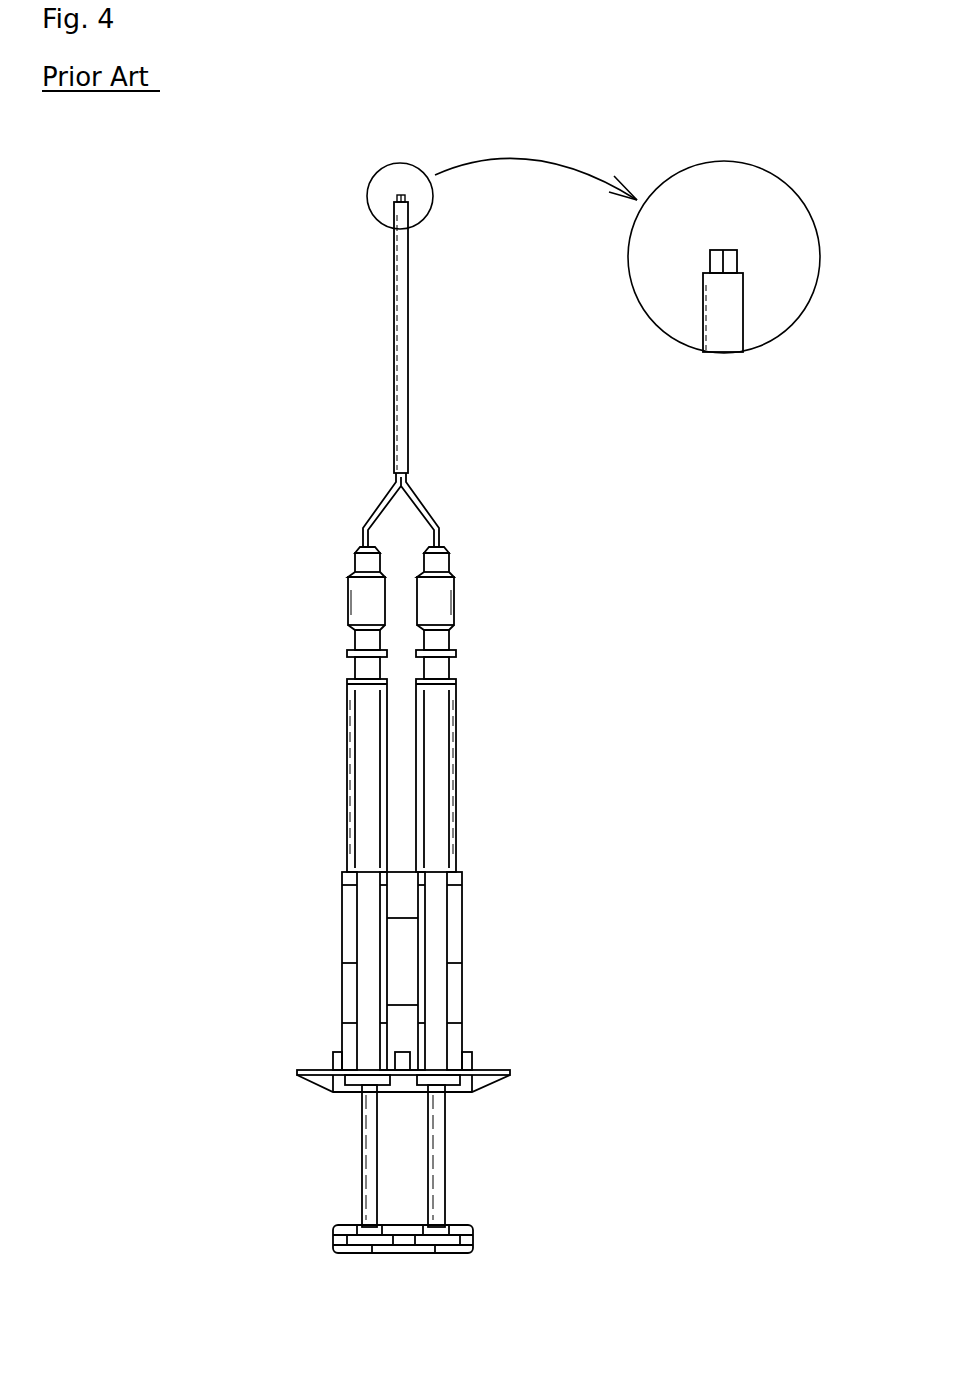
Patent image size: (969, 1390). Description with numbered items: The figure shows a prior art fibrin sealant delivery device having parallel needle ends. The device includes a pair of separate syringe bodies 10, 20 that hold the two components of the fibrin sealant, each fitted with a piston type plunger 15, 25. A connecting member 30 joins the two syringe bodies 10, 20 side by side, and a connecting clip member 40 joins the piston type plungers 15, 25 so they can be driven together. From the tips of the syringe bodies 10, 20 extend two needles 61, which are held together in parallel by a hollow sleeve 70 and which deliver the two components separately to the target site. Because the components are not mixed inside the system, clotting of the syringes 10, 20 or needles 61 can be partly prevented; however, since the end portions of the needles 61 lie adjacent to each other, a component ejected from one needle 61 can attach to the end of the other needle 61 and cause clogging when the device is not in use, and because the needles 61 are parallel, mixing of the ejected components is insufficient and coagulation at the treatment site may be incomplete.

The syringe body 10 is at (456, 787).
The syringe body 20 is at (347, 786).
The piston type plunger 15 is at (440, 1180).
The piston type plunger 25 is at (367, 1175).
The connecting member 30 is at (318, 1070).
The connecting clip member 40 is at (397, 1250).
The needles 61 is at (381, 509).
The hollow sleeve 70 is at (408, 357).